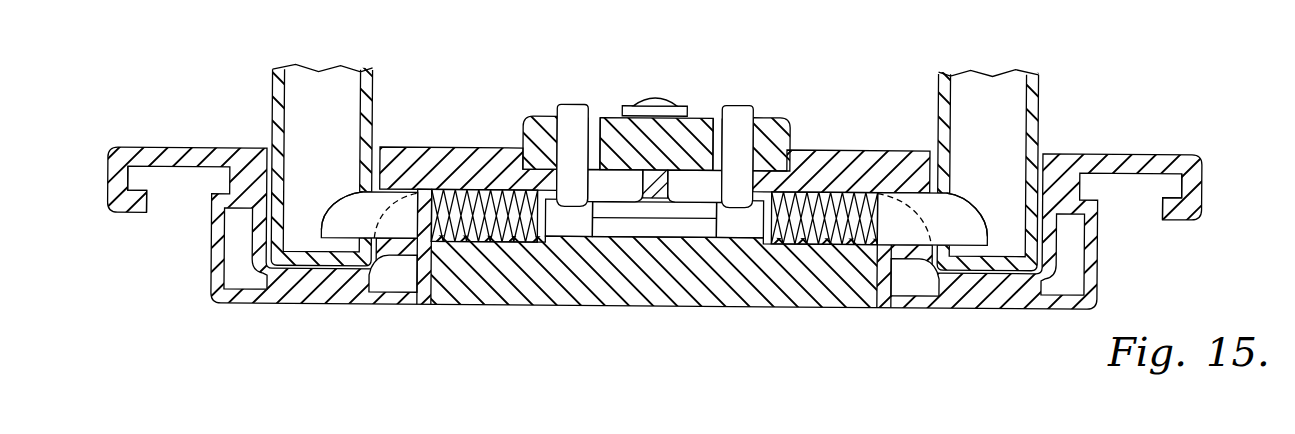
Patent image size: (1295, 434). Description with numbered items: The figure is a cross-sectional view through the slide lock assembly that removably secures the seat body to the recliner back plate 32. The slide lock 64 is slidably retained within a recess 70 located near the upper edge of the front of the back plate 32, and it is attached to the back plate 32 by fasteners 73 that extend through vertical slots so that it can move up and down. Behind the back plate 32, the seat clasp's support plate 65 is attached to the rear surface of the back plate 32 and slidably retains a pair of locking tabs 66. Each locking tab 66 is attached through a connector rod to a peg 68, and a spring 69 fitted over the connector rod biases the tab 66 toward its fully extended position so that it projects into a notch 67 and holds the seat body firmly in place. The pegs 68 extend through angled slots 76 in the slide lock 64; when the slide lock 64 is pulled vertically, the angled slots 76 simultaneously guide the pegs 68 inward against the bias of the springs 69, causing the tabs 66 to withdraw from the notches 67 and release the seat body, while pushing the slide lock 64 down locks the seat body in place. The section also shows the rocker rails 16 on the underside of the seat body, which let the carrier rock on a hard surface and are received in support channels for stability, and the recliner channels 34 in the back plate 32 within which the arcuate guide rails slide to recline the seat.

The rocker rails 16 is at (277, 89).
The recliner back plate 32 is at (973, 289).
The recliner channels 34 is at (187, 178).
The slide lock 64 is at (533, 125).
The support plate 65 is at (710, 294).
The locking tabs 66 is at (363, 212).
The notches 67 is at (360, 191).
The pegs 68 is at (572, 114).
The springs 69 is at (480, 200).
The recess 70 is at (520, 157).
The fasteners 73 is at (655, 99).
The angled slots 76 is at (593, 118).